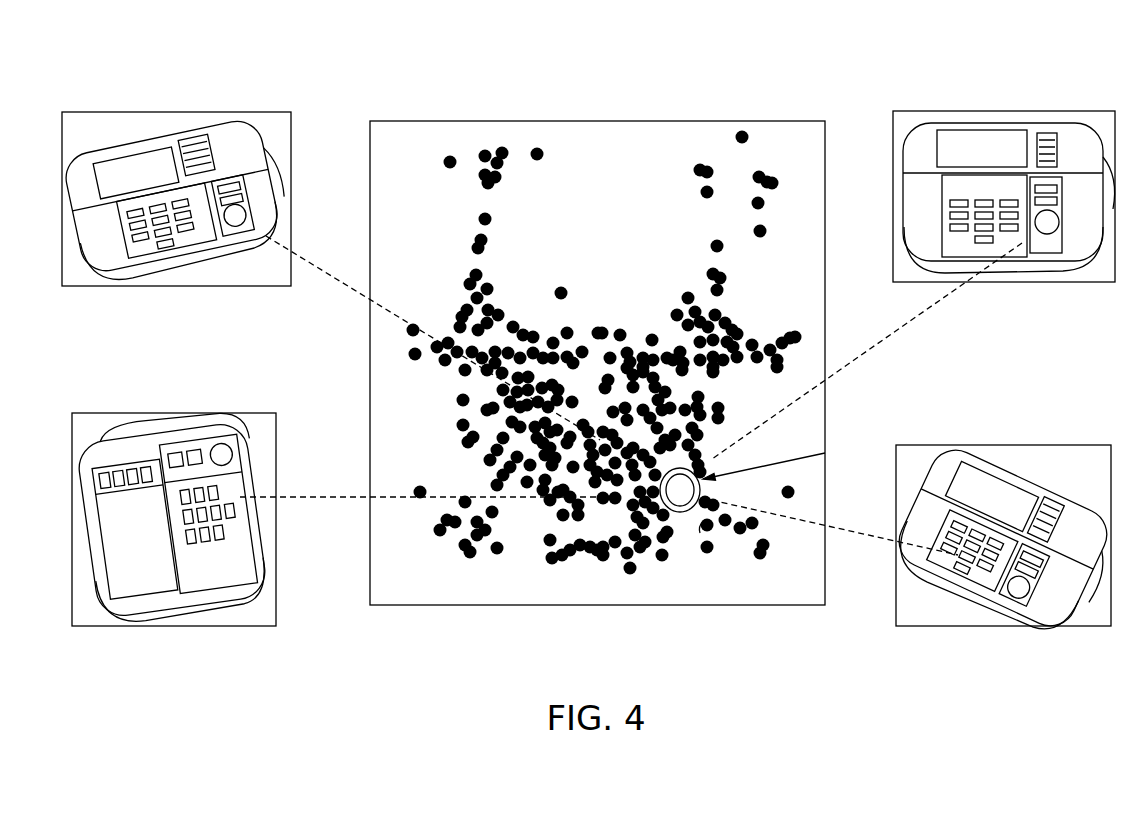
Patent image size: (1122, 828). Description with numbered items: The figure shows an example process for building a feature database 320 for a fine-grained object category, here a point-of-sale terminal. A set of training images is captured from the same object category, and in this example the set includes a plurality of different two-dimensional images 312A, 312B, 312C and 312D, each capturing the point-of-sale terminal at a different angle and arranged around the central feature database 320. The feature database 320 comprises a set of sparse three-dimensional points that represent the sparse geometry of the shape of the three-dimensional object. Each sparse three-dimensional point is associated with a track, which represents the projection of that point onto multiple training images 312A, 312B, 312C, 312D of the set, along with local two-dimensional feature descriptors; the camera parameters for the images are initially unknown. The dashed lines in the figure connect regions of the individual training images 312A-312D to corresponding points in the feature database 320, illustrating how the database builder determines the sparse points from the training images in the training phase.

The training image 312A is at (174, 112).
The training image 312B is at (167, 413).
The training image 312C is at (1008, 111).
The training image 312D is at (1007, 445).
The feature database 320 is at (598, 121).